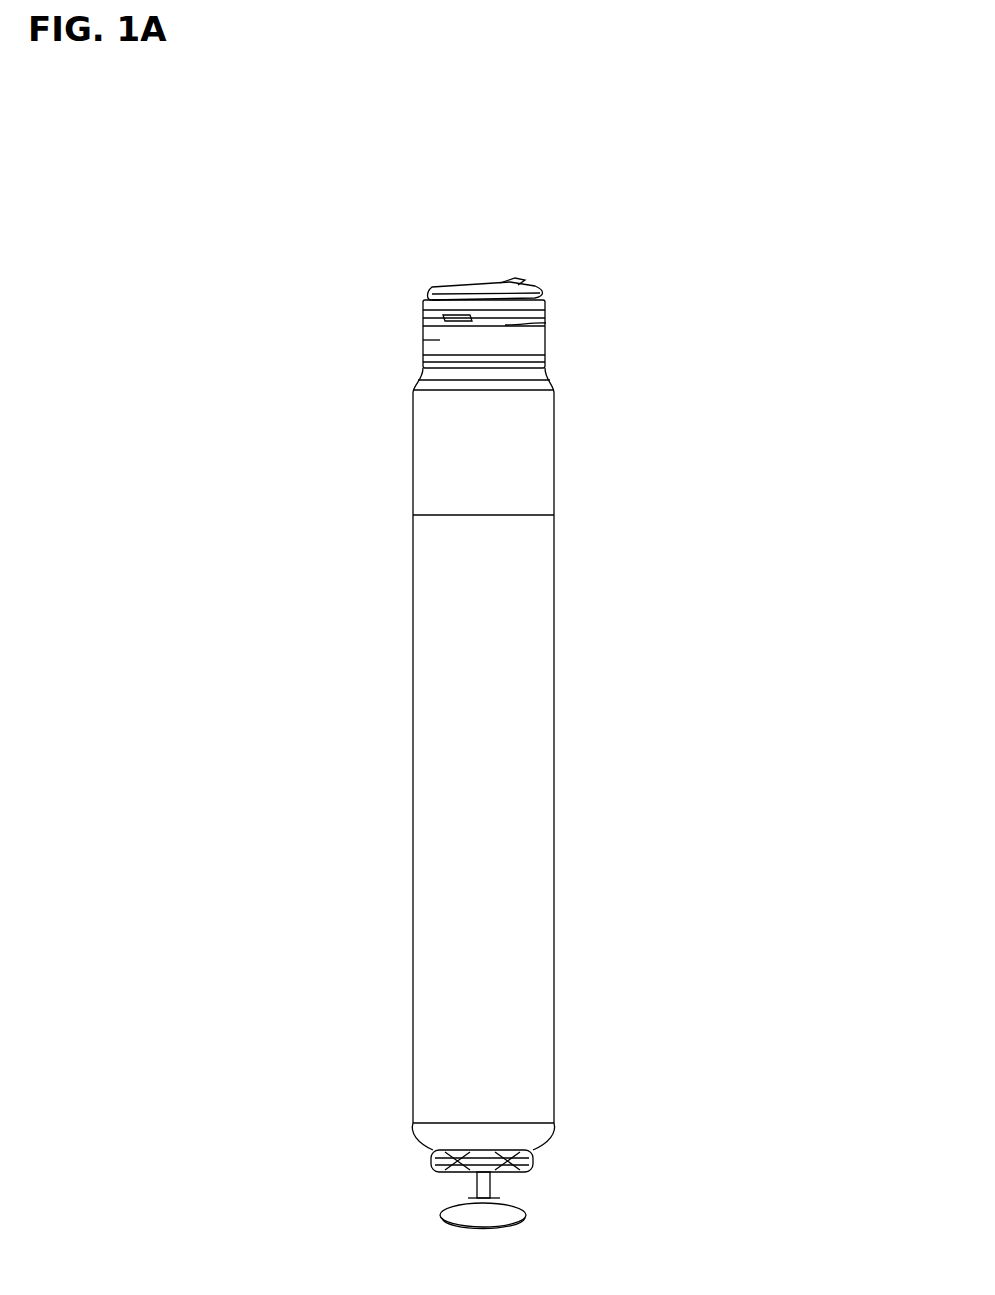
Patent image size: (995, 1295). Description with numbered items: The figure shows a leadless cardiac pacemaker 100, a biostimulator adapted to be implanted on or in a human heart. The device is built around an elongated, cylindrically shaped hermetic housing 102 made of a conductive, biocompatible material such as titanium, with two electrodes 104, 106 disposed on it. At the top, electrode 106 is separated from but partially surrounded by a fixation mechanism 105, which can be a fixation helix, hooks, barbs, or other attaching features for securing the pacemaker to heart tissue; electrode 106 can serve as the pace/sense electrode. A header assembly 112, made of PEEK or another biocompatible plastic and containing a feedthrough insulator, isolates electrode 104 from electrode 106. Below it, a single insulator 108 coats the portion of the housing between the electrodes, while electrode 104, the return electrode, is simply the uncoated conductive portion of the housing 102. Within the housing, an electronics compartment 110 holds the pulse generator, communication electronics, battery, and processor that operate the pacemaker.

The leadless cardiac pacemaker 100 is at (776, 266).
The hermetic housing 102 is at (608, 553).
The electrode 104 is at (527, 728).
The fixation mechanism 105 is at (428, 293).
The electrode 106 is at (481, 268).
The insulator 108 is at (535, 470).
The electronics compartment 110 is at (378, 418).
The header assembly 112 is at (545, 373).